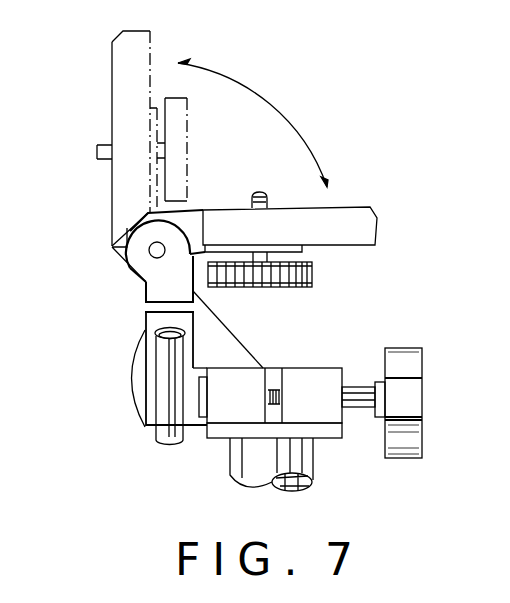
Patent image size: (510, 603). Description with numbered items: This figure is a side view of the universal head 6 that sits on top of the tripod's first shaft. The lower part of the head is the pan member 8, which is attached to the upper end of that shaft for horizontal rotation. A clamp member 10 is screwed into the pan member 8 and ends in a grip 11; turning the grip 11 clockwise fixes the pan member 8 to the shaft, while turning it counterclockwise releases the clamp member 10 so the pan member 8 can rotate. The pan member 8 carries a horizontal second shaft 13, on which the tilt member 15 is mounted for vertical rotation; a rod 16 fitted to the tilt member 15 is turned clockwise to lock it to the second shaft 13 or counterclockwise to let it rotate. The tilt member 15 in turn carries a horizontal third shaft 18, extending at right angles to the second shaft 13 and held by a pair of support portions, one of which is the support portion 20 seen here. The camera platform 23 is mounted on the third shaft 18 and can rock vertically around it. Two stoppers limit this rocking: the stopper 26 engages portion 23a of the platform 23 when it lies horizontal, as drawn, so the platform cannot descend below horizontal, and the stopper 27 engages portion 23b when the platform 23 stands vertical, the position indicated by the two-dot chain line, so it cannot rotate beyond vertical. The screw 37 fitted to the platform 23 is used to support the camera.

The universal head 6 is at (69, 262).
The pan member 8 is at (322, 369).
The clamp member 10 is at (356, 408).
The grip 11 is at (405, 458).
The second shaft 13 is at (138, 380).
The tilt member 15 is at (145, 322).
The rod 16 is at (160, 437).
The third shaft 18 is at (151, 258).
The support portion 20 is at (132, 229).
The camera platform 23 is at (355, 207).
The portion of platform 23a is at (197, 207).
The portion of platform 23b is at (116, 245).
The stopper 26 is at (203, 258).
The stopper 27 is at (141, 287).
The screw 37 is at (280, 278).